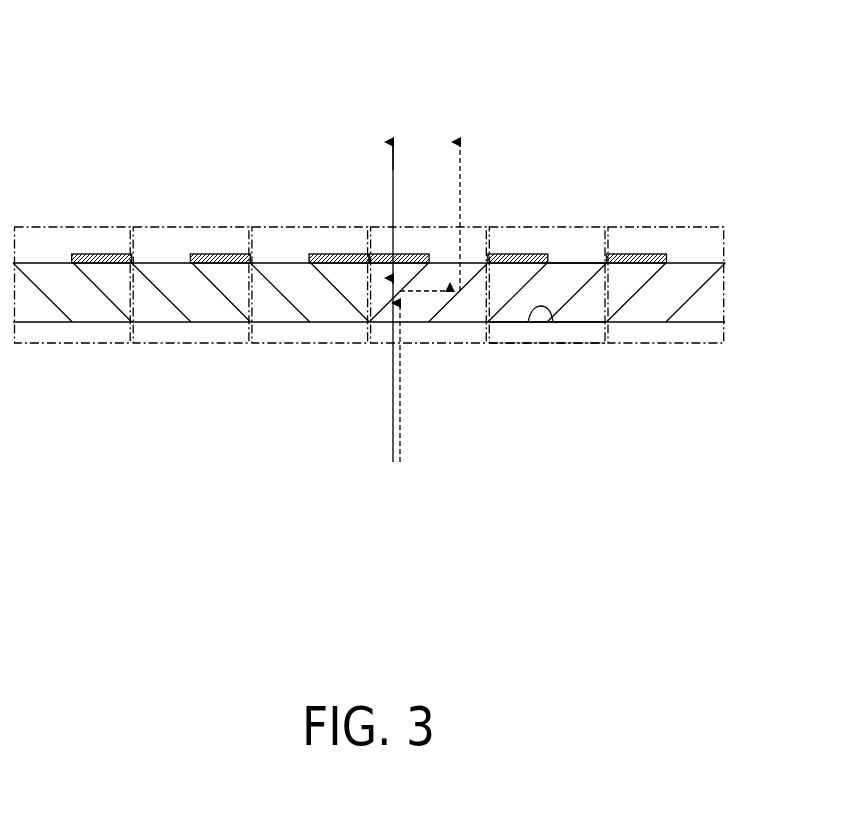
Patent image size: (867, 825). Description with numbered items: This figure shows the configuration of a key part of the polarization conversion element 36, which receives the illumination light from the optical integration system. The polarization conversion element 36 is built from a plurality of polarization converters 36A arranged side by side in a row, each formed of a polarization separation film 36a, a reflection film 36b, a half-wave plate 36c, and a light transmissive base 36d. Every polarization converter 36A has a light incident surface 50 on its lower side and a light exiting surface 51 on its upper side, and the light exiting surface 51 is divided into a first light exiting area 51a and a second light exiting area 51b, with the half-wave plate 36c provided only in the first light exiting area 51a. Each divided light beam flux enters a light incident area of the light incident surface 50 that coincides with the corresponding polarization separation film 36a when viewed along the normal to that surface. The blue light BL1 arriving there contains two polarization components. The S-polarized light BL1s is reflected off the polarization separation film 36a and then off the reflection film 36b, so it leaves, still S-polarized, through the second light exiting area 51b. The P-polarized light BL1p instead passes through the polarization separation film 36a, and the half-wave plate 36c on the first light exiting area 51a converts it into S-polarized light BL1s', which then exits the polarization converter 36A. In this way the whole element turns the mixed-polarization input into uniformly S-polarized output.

The polarization conversion element 36 is at (672, 103).
The polarization converter 36A is at (73, 227).
The polarization separation film 36a is at (500, 312).
The reflection film 36b is at (528, 323).
The half-wave plate 36c is at (502, 256).
The light transmissive base 36d is at (517, 315).
The light incident surface 50 is at (553, 323).
The light exiting surface 51 is at (610, 130).
The first light exiting area 51a is at (523, 256).
The second light exiting area 51b is at (565, 262).
The blue light BL1 is at (478, 527).
The P-polarized light BL1p is at (397, 422).
The S-polarized light BL1s is at (435, 335).
The S-polarized light BL1s' is at (376, 129).